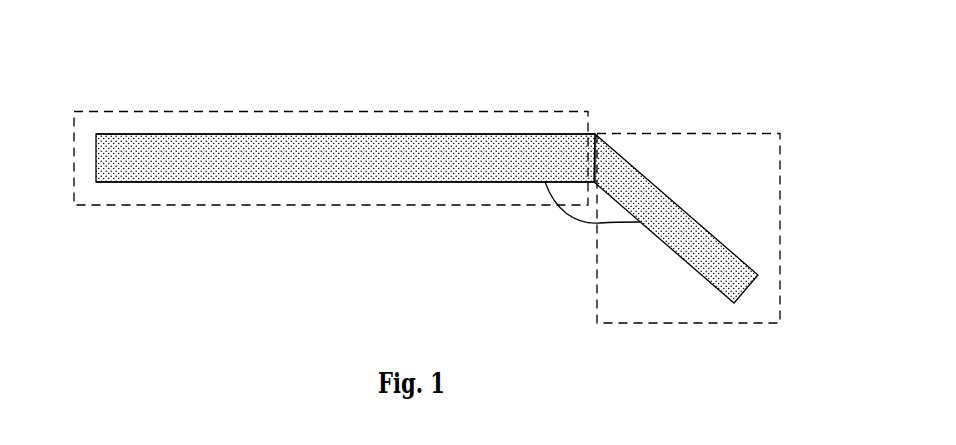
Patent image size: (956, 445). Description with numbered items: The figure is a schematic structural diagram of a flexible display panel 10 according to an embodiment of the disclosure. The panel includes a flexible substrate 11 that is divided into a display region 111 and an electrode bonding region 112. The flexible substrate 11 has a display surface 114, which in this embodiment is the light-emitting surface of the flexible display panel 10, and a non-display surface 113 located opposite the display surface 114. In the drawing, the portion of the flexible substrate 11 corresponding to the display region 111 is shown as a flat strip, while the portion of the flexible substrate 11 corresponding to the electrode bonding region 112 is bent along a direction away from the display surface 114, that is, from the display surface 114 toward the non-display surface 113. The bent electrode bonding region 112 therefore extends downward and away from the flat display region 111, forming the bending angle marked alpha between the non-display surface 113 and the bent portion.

The flexible display panel 10 is at (170, 87).
The flexible substrate 11 is at (177, 167).
The display region 111 is at (452, 111).
The electrode bonding region 112 is at (687, 133).
The non-display surface 113 is at (327, 182).
The display surface 114 is at (237, 133).